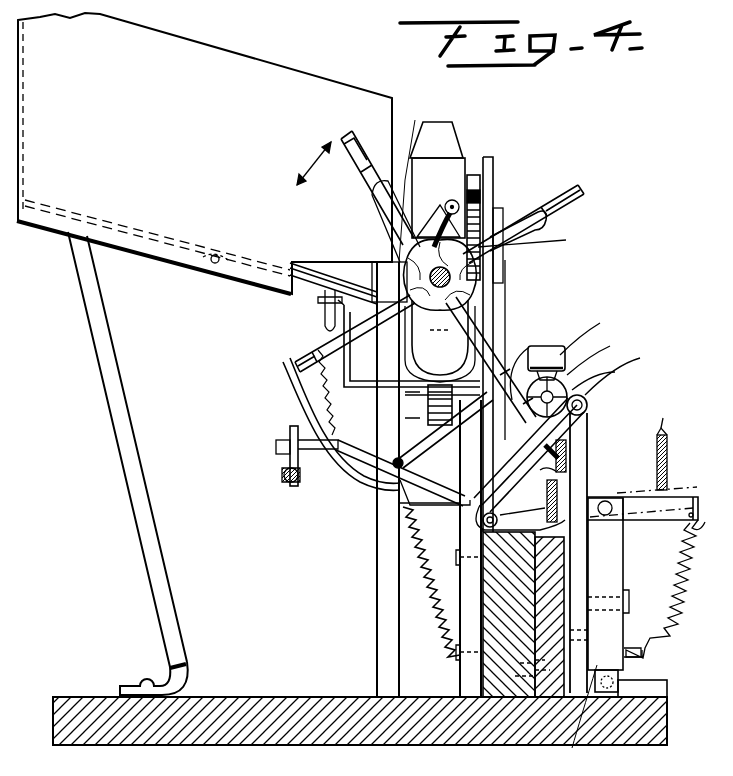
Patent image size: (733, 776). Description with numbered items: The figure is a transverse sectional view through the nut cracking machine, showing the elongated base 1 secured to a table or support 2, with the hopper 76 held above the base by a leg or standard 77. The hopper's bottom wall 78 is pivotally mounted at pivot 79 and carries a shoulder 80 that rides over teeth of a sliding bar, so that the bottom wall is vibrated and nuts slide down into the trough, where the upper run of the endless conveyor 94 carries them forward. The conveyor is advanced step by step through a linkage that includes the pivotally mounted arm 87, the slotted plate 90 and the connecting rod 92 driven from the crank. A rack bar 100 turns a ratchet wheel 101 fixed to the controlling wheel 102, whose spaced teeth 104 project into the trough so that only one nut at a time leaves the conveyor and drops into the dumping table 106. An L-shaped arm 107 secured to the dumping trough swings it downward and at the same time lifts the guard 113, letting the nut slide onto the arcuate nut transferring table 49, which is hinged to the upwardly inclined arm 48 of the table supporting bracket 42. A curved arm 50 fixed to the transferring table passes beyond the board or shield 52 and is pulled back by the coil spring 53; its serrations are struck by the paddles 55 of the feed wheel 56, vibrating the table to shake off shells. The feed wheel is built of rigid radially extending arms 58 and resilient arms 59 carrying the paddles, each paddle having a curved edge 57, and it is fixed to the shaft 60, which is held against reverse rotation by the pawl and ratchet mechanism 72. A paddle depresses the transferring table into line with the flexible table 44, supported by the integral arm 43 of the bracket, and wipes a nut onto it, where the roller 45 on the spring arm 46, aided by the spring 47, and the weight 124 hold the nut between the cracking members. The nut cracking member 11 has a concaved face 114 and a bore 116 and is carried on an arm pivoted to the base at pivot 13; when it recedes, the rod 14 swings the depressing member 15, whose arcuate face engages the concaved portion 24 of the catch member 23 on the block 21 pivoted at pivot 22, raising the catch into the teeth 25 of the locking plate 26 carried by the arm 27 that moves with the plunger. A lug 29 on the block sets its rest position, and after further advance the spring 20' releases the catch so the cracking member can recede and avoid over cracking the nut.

The base 1 is at (612, 556).
The table or support 2 is at (515, 745).
The nut cracking member 11 is at (624, 368).
The pivot 13 is at (572, 748).
The rod 14 is at (587, 455).
The depressing member 15 is at (580, 552).
The spring 20' is at (655, 641).
The block 21 is at (613, 578).
The pivot 22 is at (690, 594).
The catch member 23 is at (640, 489).
The concaved portion 24 is at (545, 480).
The teeth 25 is at (680, 492).
The locking plate 26 is at (667, 457).
The arm 27 is at (666, 413).
The lug 29 is at (618, 680).
The table supporting bracket 42 is at (459, 676).
The integral arm 43 is at (547, 458).
The table 44 is at (575, 390).
The roller 45 is at (588, 405).
The spring arm 46 is at (587, 428).
The spring 47 is at (528, 520).
The upwardly inclined arm 48 is at (390, 495).
The nut transferring table 49 is at (480, 470).
The curved arm 50 is at (358, 488).
The board or shield 52 is at (395, 526).
The coil spring 53 is at (440, 610).
The paddles 55 is at (360, 126).
The feed wheel 56 is at (395, 234).
The curved edge 57 is at (445, 510).
The radially extending arms 58 is at (500, 332).
The resilient arms 59 is at (382, 205).
The shaft 60 is at (460, 278).
The pawl and ratchet mechanism 72 is at (533, 248).
The hopper 76 is at (281, 68).
The leg or standard 77 is at (145, 493).
The bottom wall 78 is at (145, 234).
The pivot 79 is at (213, 265).
The shoulder 80 is at (312, 312).
The pivotally mounted arm 87 is at (348, 478).
The plate 90 is at (276, 462).
The connecting rod 92 is at (288, 485).
The endless conveyor 94 is at (490, 400).
The rack bar 100 is at (463, 168).
The ratchet wheel 101 is at (482, 222).
The controlling wheel 102 is at (493, 205).
The teeth 104 is at (450, 138).
The dumping table 106 is at (498, 342).
The L-shaped arm 107 is at (375, 390).
The guard 113 is at (440, 341).
The concaved faces 114 is at (597, 330).
The bores 116 is at (572, 355).
The weight 124 is at (603, 352).